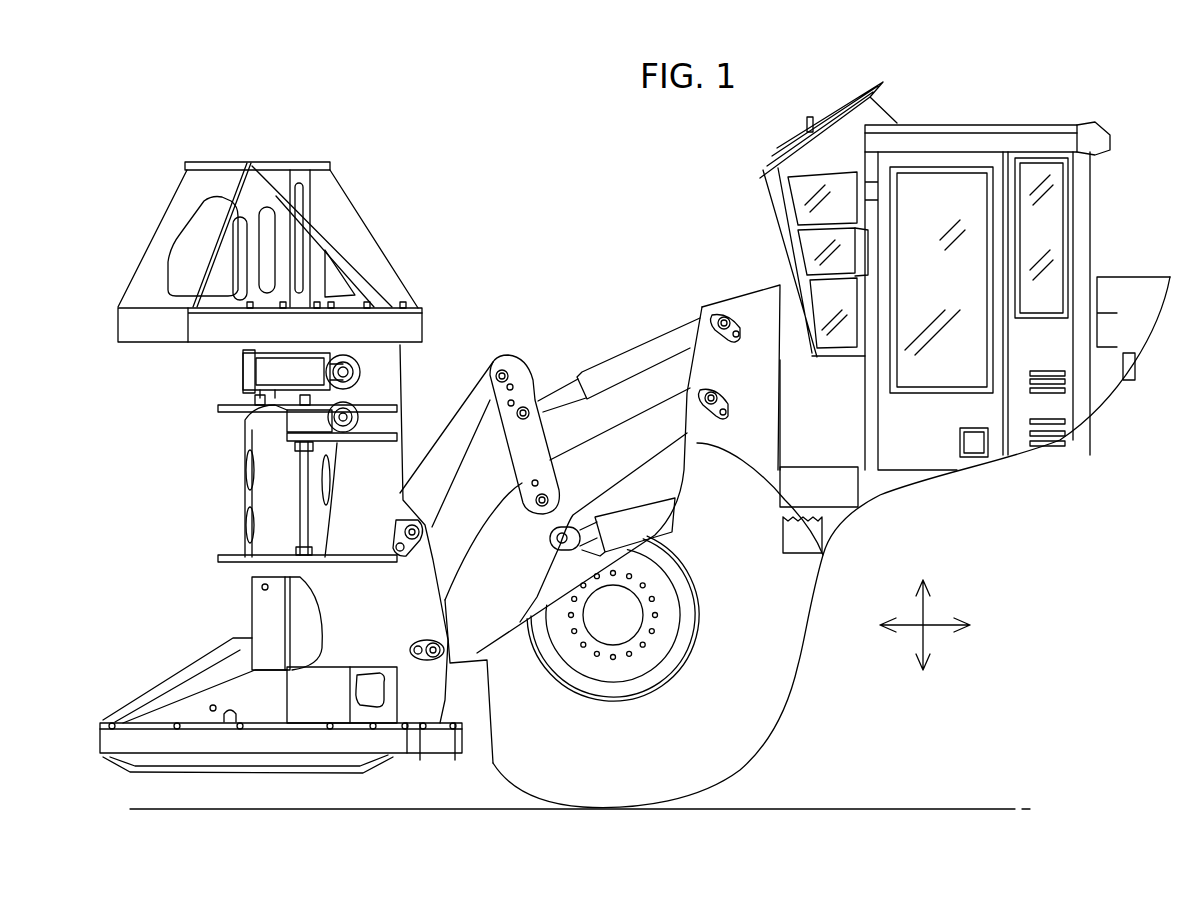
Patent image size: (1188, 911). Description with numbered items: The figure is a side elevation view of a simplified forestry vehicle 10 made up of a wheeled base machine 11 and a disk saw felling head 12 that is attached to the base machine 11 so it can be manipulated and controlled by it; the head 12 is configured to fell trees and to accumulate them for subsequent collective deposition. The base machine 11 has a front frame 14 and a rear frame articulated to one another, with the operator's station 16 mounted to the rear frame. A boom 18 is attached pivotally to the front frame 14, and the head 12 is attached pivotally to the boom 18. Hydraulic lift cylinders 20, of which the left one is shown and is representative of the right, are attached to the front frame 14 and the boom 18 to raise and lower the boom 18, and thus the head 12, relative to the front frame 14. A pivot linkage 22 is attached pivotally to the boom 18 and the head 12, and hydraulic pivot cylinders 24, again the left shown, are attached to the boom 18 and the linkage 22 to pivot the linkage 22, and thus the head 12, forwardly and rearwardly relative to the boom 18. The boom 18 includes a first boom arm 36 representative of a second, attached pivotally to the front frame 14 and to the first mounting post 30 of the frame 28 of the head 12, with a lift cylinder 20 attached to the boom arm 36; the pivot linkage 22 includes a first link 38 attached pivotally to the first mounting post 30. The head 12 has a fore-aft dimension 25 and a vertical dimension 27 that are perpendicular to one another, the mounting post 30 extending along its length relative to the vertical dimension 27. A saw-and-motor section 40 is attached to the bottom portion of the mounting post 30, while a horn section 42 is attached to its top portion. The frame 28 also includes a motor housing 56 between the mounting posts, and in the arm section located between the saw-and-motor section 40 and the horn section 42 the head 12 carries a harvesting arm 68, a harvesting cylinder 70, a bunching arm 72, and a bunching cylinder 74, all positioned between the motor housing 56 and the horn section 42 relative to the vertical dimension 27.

The forestry vehicle 10 is at (471, 164).
The base machine 11 is at (608, 171).
The disk saw felling head 12 is at (391, 223).
The front frame 14 is at (750, 299).
The operator's station 16 is at (962, 138).
The boom 18 is at (641, 384).
The hydraulic lift cylinders 20 is at (630, 515).
The pivot linkage 22 is at (496, 342).
The hydraulic pivot cylinders 24 is at (582, 378).
The fore-aft dimension 25 is at (940, 625).
The vertical dimension 27 is at (930, 634).
The frame 28 is at (382, 371).
The first mounting post 30 is at (392, 423).
The first boom arm 36 is at (495, 680).
The first link 38 is at (445, 475).
The saw-and-motor section 40 is at (272, 745).
The horn section 42 is at (148, 232).
The motor housing 56 is at (262, 607).
The harvesting arm 68 is at (246, 498).
The harvesting cylinder 70 is at (298, 466).
The bunching arm 72 is at (243, 361).
The bunching cylinder 74 is at (345, 372).